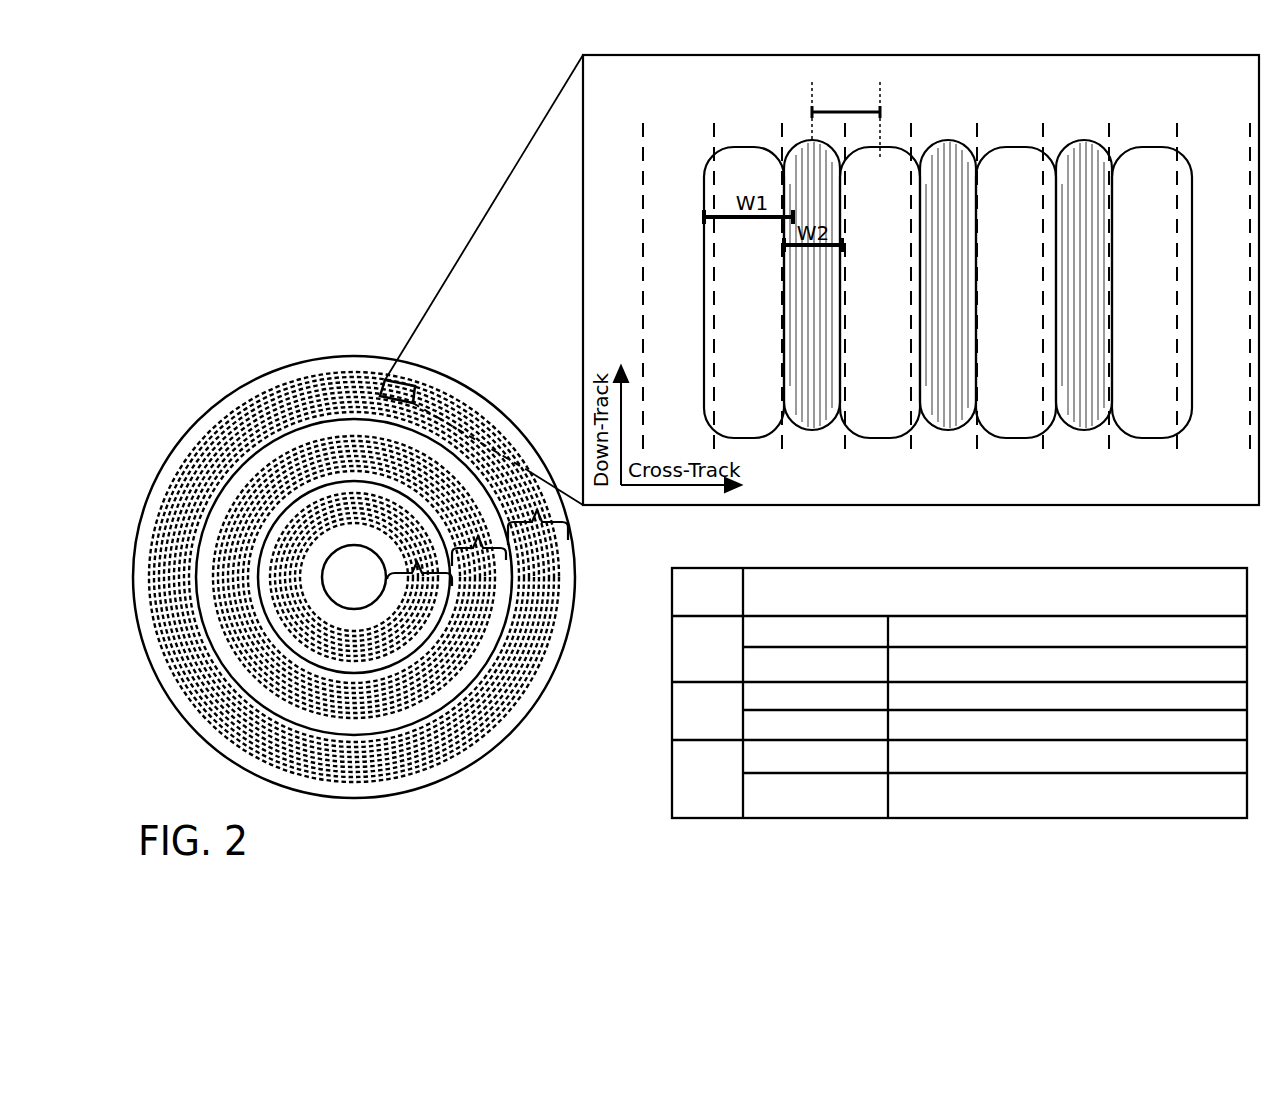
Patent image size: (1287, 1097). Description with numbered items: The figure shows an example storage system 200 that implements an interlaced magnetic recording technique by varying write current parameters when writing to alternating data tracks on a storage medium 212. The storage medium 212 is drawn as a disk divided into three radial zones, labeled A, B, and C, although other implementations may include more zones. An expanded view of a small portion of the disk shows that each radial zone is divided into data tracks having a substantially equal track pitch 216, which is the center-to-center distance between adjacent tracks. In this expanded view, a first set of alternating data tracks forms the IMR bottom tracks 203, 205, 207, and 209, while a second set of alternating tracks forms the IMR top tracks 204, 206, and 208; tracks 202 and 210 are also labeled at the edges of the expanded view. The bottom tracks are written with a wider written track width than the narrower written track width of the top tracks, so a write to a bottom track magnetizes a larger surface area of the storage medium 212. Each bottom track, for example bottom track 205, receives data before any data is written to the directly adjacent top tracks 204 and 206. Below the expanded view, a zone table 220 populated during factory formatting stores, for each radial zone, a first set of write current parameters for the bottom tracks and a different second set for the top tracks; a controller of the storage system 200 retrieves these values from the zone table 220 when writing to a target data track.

The storage system 200 is at (367, 178).
The track 202 is at (665, 186).
The IMR bottom track 203 is at (731, 186).
The IMR top track 204 is at (796, 182).
The IMR bottom track 205 is at (861, 186).
The IMR top track 206 is at (926, 186).
The IMR bottom track 207 is at (995, 186).
The IMR top track 208 is at (1061, 186).
The IMR bottom track 209 is at (1128, 186).
The track 210 is at (1208, 186).
The storage medium 212 is at (276, 367).
The track pitch 216 is at (846, 119).
The zone table 220 is at (670, 570).